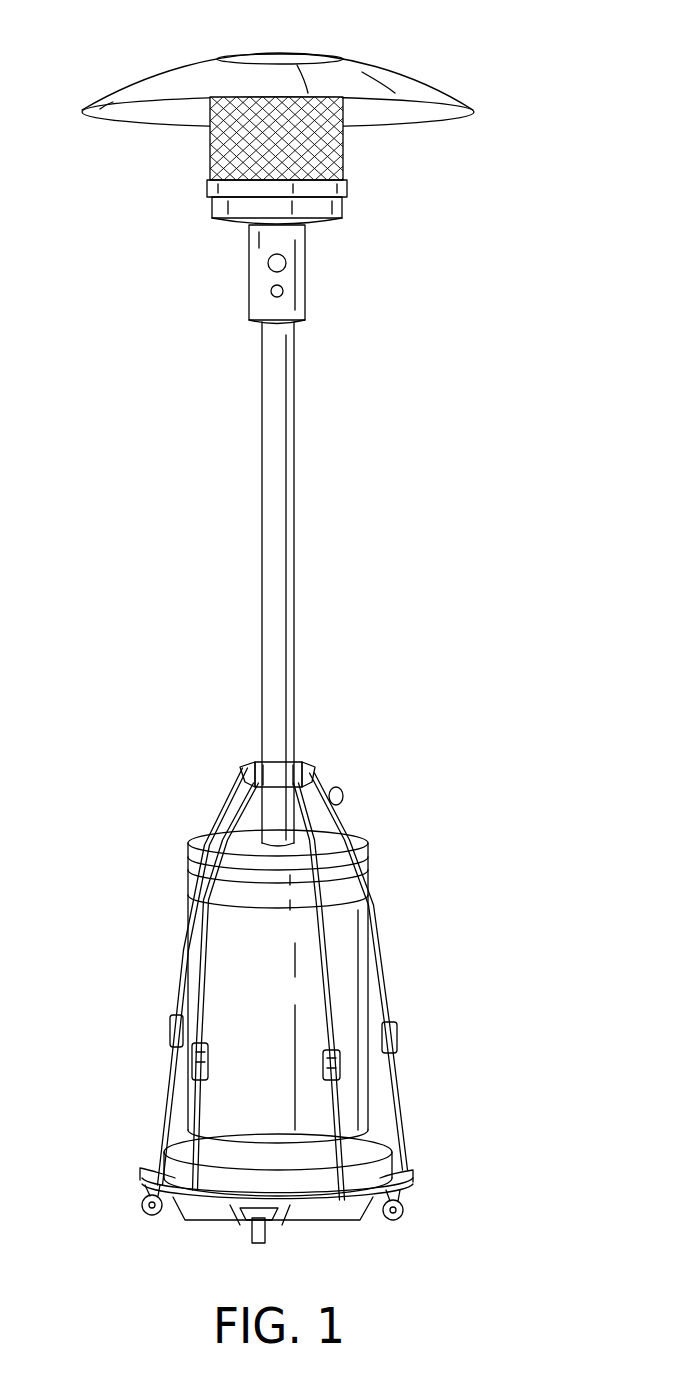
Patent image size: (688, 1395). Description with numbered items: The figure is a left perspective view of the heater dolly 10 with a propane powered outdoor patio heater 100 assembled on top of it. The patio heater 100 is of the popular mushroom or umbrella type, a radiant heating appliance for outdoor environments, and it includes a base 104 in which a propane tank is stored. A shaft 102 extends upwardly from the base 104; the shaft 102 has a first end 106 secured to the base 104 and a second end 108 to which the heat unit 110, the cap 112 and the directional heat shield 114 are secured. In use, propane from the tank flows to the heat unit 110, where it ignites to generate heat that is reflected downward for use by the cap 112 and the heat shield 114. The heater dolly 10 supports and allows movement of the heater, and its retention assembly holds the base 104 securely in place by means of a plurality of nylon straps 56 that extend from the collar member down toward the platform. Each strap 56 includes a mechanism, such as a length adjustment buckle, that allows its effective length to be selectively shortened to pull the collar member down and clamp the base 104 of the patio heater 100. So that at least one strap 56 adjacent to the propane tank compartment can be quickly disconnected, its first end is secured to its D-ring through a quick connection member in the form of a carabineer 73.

The heater dolly 10 is at (425, 1167).
The nylon straps 56 is at (387, 997).
The carabineer 73 is at (339, 790).
The outdoor patio heater 100 is at (350, 575).
The shaft 102 is at (262, 530).
The base 104 is at (293, 918).
The first end 106 is at (257, 830).
The second end 108 is at (295, 335).
The heat unit 110 is at (345, 171).
The cap 112 is at (253, 53).
The directional heat shield 114 is at (427, 88).